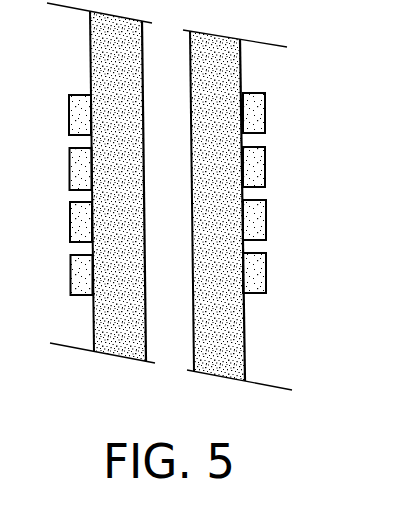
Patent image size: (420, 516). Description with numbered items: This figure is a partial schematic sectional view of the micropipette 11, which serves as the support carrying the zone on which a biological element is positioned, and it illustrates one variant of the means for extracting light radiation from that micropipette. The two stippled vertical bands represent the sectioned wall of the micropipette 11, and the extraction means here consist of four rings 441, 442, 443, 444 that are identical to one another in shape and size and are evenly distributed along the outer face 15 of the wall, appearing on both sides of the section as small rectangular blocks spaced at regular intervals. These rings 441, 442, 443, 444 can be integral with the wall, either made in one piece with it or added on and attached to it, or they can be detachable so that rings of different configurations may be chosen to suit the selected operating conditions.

The micropipette 11 is at (89, 60).
The outer face 15 is at (93, 333).
The ring 441 is at (258, 108).
The ring 442 is at (258, 167).
The ring 443 is at (260, 218).
The ring 444 is at (265, 287).